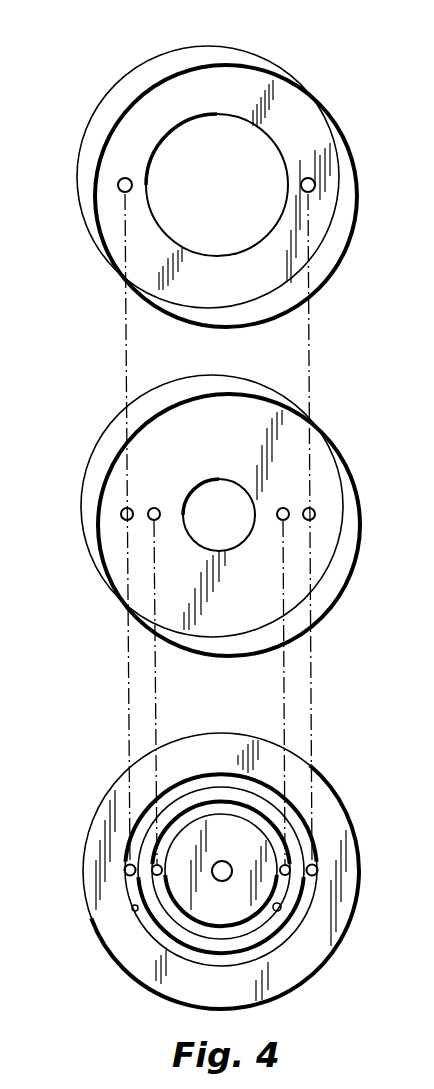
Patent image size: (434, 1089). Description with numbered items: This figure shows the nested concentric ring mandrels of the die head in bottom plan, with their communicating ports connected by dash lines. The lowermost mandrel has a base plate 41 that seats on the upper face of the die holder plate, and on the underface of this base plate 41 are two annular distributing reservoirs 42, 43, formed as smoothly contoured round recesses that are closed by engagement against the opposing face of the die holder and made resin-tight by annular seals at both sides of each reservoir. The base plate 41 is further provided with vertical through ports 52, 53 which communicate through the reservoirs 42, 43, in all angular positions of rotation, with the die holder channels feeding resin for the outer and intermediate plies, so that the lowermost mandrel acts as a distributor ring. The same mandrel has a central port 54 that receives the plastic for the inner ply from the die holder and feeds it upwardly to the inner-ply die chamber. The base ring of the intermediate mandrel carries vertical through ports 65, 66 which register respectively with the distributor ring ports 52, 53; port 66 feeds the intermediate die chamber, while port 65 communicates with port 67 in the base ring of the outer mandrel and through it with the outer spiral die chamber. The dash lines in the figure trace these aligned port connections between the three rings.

The base plate 41 is at (110, 789).
The annular distributing reservoir 42 is at (134, 911).
The annular distributing reservoir 43 is at (280, 910).
The vertical through port 52 is at (125, 872).
The vertical through port 53 is at (152, 867).
The central port 54 is at (222, 881).
The vertical through port 65 is at (121, 513).
The vertical through port 66 is at (158, 509).
The port 67 is at (128, 179).